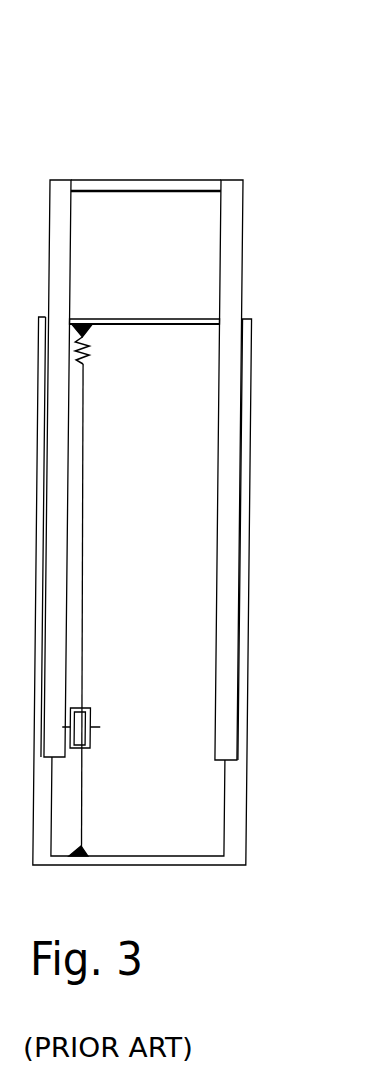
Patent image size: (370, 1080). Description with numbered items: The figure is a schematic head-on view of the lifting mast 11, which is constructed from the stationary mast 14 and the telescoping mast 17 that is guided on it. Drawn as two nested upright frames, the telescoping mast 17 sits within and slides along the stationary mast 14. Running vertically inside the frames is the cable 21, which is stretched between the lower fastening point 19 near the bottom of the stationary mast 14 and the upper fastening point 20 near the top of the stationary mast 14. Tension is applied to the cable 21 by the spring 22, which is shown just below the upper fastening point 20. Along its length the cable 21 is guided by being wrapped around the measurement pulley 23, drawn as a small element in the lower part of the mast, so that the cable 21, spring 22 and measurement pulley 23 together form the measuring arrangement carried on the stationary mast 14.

The lifting mast 11 is at (222, 130).
The stationary mast 14 is at (237, 800).
The telescoping mast 17 is at (62, 248).
The lower fastening point 19 is at (88, 845).
The upper fastening point 20 is at (94, 317).
The cable 21 is at (88, 496).
The spring 22 is at (87, 361).
The measurement pulley 23 is at (100, 725).